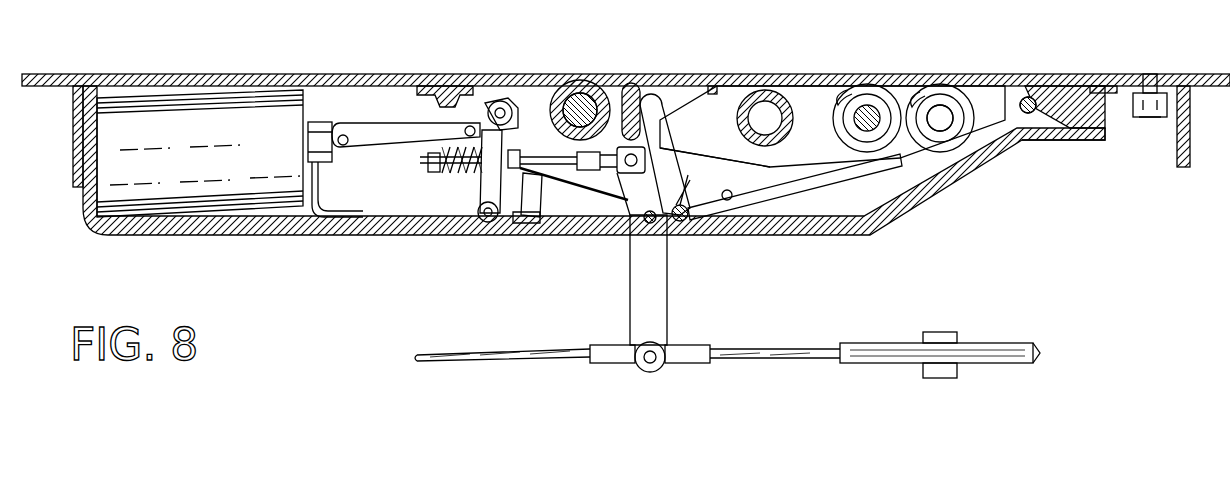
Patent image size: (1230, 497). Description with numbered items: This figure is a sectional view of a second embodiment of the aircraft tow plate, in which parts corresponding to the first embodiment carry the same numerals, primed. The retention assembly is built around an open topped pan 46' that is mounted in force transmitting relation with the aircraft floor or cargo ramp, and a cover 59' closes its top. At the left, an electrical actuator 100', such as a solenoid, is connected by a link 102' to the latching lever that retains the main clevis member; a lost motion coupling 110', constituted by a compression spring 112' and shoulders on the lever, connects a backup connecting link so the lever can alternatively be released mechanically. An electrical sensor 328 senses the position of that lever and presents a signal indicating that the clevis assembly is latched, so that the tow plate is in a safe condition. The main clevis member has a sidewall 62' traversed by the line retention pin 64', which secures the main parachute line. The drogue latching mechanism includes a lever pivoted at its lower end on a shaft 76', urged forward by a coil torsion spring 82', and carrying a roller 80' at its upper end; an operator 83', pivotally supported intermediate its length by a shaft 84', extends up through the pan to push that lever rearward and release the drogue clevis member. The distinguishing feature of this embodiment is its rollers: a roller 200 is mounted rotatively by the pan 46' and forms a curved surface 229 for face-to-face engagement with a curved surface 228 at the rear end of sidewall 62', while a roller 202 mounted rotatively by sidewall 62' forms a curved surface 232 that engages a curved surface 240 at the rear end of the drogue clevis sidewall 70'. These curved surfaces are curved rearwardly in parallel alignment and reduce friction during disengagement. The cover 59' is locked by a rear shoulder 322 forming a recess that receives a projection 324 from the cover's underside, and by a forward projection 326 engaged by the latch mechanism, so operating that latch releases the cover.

The pan 46' is at (626, 171).
The cover 59' is at (832, 100).
The sidewall 62' is at (795, 187).
The line retention pin 64' is at (595, 87).
The sidewall 70' is at (750, 209).
The shaft 76' is at (698, 194).
The roller 80' is at (658, 189).
The coil torsion spring 82' is at (635, 215).
The operator 83' is at (727, 336).
The shaft 84' is at (624, 247).
The electrical actuator 100' is at (230, 153).
The link 102' is at (406, 90).
The lost motion coupling 110' is at (406, 165).
The compression spring 112' is at (521, 216).
The roller 200 is at (958, 102).
The roller 202 is at (877, 92).
The curved surface 228 is at (920, 97).
The curved surface 229 is at (942, 157).
The curved surface 232 is at (787, 125).
The curved surface 240 is at (840, 100).
The rear shoulder 322 is at (1110, 95).
The projection 324 is at (1068, 120).
The forward projection 326 is at (518, 130).
The electrical sensor 328 is at (530, 222).